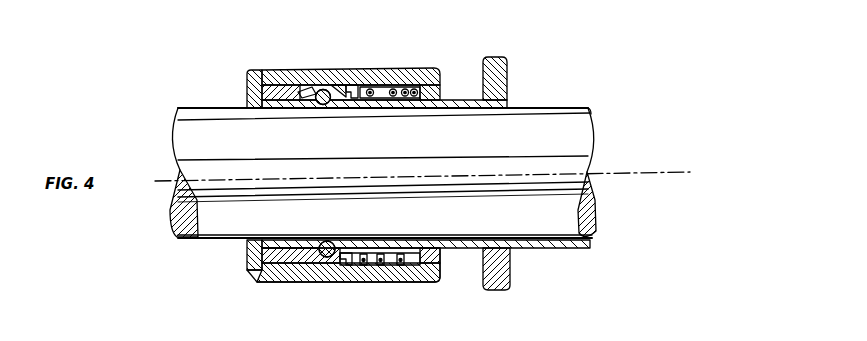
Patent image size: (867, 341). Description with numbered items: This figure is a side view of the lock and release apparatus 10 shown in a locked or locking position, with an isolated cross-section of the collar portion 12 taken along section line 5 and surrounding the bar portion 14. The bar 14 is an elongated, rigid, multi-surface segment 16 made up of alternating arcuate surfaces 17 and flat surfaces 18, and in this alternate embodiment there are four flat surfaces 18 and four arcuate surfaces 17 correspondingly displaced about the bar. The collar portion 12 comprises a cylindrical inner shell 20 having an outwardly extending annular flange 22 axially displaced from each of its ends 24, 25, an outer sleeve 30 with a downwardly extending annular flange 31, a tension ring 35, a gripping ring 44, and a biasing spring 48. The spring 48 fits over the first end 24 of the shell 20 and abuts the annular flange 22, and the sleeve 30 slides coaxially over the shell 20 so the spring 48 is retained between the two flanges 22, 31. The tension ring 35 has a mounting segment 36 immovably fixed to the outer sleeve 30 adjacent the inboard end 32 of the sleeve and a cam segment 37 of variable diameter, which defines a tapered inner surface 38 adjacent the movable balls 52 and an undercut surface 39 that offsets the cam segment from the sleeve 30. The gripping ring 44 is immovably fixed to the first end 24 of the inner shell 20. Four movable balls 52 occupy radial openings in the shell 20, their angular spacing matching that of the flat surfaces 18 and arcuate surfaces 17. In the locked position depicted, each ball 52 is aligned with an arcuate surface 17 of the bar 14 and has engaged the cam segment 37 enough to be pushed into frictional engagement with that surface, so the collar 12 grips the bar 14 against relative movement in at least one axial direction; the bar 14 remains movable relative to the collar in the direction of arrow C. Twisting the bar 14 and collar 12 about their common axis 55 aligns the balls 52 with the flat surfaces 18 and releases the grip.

The lock and release apparatus 10 is at (558, 55).
The collar portion 12 is at (514, 289).
The bar portion 14 is at (425, 128).
The multi-surface segment 16 is at (596, 129).
The arcuate surfaces 17 is at (566, 107).
The flat surfaces 18 is at (572, 143).
The inner shell 20 is at (468, 250).
The annular flange 22 is at (353, 264).
The first end of the inner shell 24 is at (510, 246).
The second end of the inner shell 25 is at (248, 250).
The outer sleeve 30 is at (350, 70).
The annular flange of the outer sleeve 31 is at (440, 78).
The inboard end of the sleeve 32 is at (248, 273).
The tension ring 35 is at (244, 90).
The mounting segment 36 is at (263, 97).
The cam segment 37 is at (345, 82).
The tapered inner surface 38 is at (392, 89).
The undercut surface 39 is at (322, 87).
The gripping ring 44 is at (499, 72).
The biasing spring 48 is at (405, 264).
The movable balls 52 is at (326, 90).
The common axis 55 is at (668, 172).
The section line 5- 5 is at (320, 68).
The arrow C is at (602, 190).